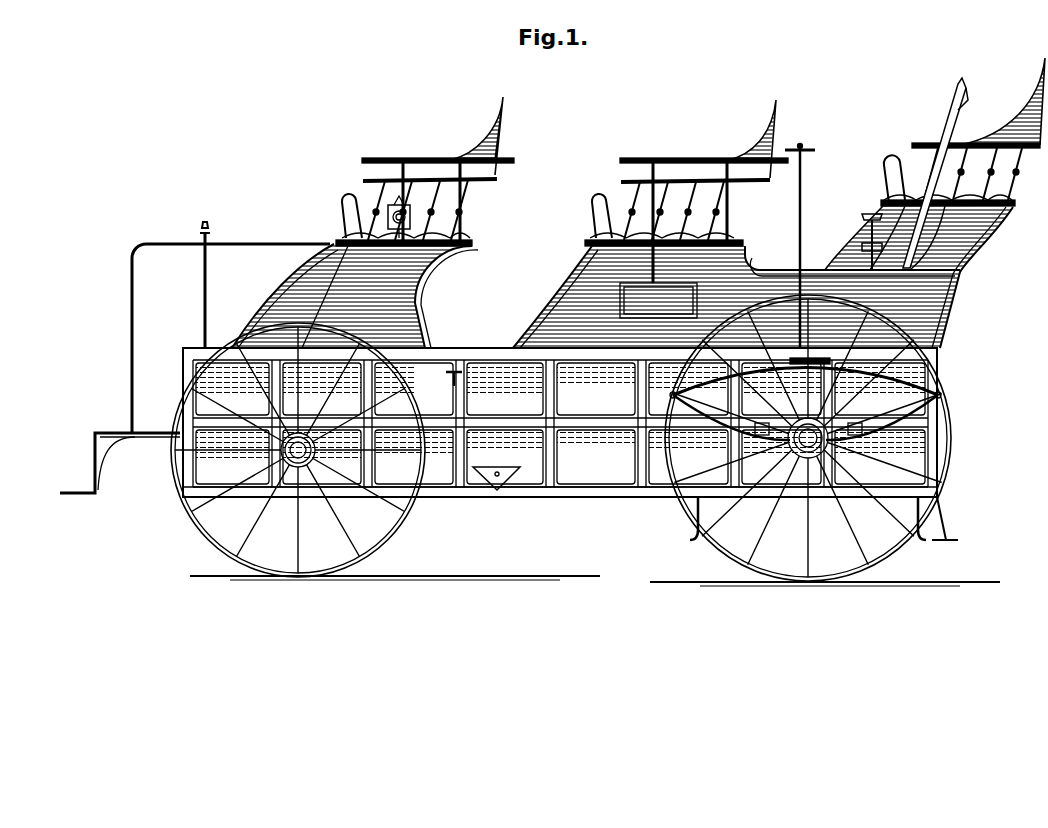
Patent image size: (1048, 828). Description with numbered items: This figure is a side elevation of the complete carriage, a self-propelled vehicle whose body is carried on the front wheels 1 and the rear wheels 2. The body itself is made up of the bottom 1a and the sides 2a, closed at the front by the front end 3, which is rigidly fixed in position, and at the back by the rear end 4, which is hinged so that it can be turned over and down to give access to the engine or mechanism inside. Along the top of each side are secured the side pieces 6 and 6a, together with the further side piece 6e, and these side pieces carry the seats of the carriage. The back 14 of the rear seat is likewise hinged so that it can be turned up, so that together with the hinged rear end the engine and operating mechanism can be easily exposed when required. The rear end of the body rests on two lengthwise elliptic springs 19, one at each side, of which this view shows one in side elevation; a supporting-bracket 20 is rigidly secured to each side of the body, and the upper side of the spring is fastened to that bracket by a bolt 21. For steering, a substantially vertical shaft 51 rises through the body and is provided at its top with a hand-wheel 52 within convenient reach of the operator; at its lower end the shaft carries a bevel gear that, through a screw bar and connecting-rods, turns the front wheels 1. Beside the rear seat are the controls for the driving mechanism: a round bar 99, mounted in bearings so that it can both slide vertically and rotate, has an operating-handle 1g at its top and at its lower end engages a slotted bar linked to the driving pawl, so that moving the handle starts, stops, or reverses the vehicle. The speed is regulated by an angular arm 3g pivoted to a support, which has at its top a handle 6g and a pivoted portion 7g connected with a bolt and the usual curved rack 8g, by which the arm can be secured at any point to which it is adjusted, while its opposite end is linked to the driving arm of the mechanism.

The front wheels 1 is at (172, 482).
The bottom of the carriage-body 1a is at (570, 498).
The rear wheels 2 is at (953, 450).
The sides of the carriage-body 2a is at (505, 423).
The front end 3 is at (200, 385).
The rear end 4 is at (942, 442).
The side piece 6 is at (418, 312).
The side piece 6a is at (545, 313).
The quarter-round ledge 6e is at (753, 263).
The back of the rear seat 14 is at (962, 266).
The elliptic spring 19 is at (852, 385).
The supporting-bracket 20 is at (811, 360).
The bolt 21 is at (805, 410).
The vertical shaft 51 is at (798, 220).
The hand-wheel 52 is at (805, 150).
The operating-handle 1g is at (866, 212).
The angular arm 3g is at (935, 164).
The handle 6g is at (934, 173).
The pivoted portion 7g is at (968, 110).
The curved rack 8g is at (912, 238).
The round bar 99 is at (862, 247).